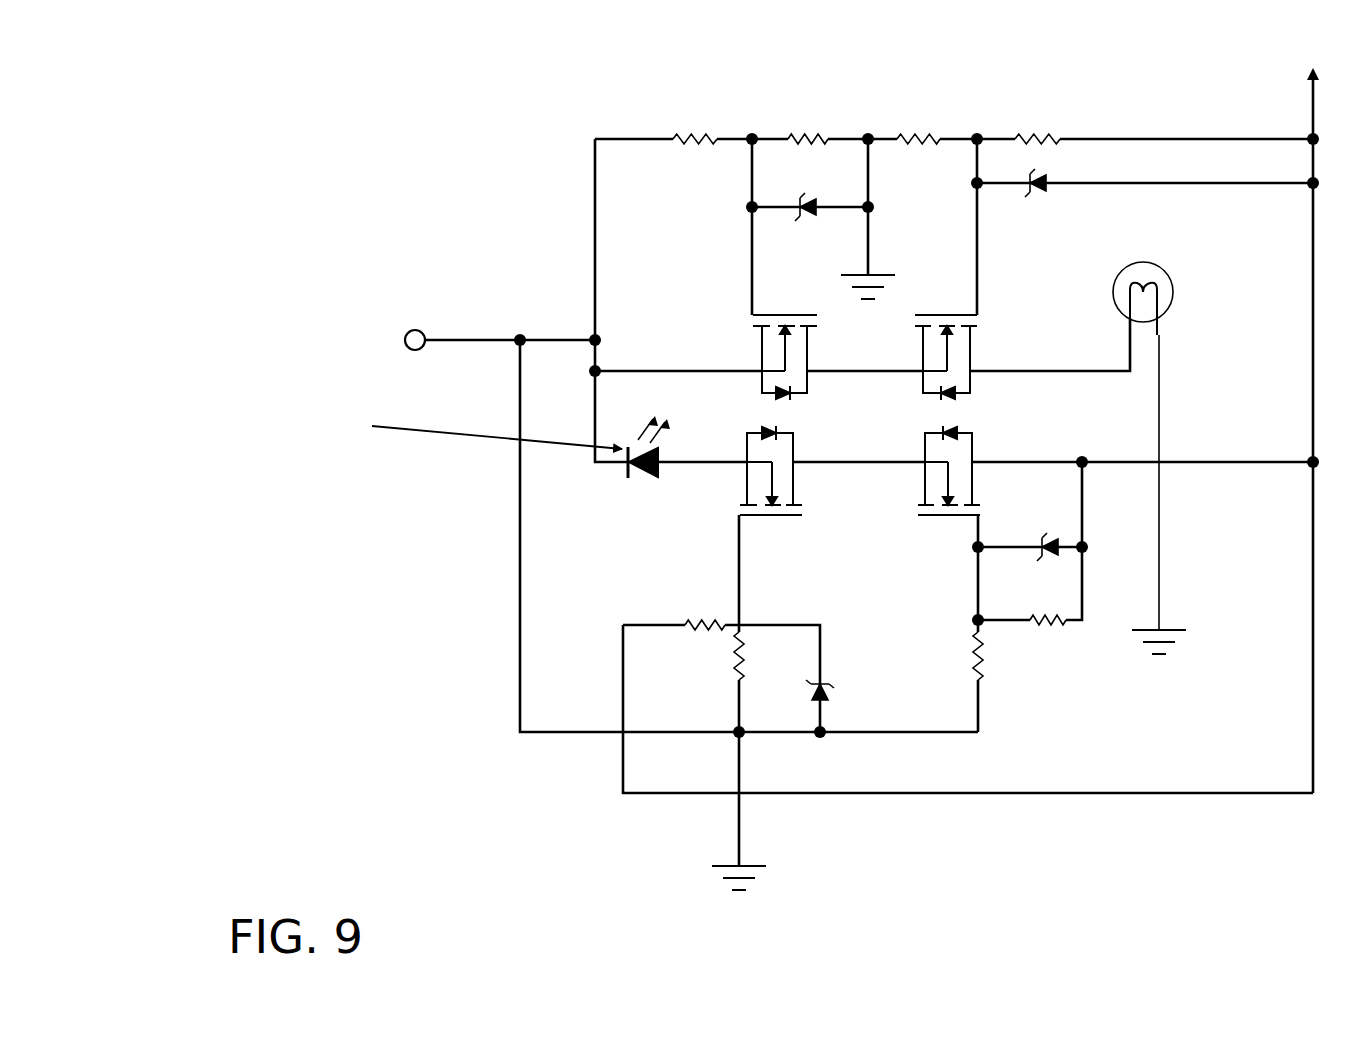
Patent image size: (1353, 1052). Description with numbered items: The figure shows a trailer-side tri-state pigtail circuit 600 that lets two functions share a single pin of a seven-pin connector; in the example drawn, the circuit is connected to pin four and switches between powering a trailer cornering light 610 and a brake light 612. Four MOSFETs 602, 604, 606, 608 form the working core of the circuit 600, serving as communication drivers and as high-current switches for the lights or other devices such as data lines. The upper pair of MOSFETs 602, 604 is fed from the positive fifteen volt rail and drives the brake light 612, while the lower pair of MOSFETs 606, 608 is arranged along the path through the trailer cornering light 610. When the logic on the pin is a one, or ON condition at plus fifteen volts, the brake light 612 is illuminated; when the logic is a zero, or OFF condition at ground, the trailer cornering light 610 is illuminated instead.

The trailer-side tri-state pigtail circuit 600 is at (418, 68).
The MOSFET 602 is at (745, 348).
The MOSFET 604 is at (912, 357).
The MOSFET 606 is at (735, 490).
The MOSFET 608 is at (912, 500).
The trailer cornering light 610 is at (636, 483).
The brake light 612 is at (1116, 272).